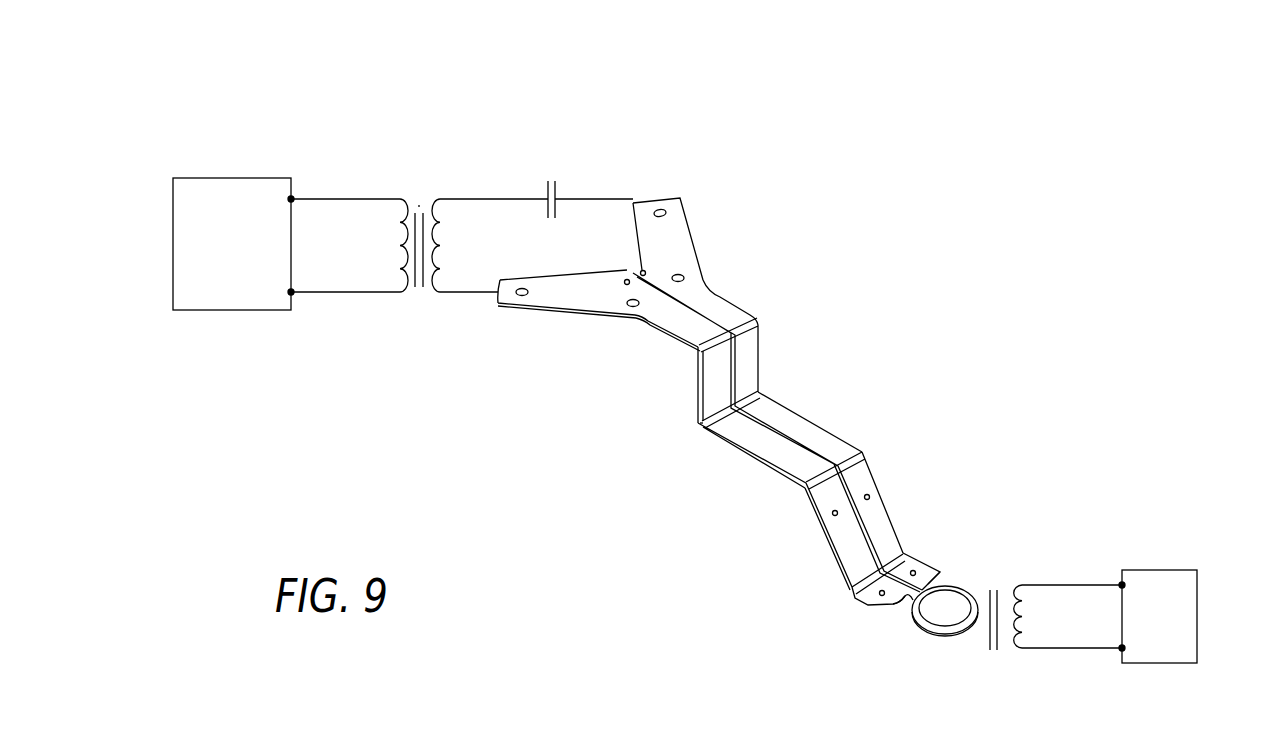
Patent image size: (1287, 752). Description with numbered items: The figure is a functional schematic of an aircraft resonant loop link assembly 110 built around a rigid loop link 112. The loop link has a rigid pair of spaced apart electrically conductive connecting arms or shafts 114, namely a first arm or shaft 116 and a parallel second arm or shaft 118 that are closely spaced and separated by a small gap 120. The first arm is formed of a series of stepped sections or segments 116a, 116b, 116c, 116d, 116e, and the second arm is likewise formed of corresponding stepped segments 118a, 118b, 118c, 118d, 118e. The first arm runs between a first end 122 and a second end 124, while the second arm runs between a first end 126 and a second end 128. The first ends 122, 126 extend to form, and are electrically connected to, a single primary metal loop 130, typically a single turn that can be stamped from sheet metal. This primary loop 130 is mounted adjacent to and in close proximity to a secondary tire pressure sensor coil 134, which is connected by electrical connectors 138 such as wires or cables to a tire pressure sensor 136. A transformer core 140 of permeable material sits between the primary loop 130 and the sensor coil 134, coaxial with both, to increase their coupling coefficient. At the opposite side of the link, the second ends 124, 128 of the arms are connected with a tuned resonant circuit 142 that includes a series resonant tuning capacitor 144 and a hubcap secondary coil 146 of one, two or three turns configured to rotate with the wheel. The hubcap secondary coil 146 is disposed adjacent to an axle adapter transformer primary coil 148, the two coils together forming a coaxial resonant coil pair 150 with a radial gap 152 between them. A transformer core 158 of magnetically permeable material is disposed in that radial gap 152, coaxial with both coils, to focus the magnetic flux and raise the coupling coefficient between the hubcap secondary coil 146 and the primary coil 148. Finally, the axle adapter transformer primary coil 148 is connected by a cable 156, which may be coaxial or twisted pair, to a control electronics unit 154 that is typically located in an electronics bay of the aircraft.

The resonant loop link assembly 110 is at (993, 353).
The rigid loop link 112 is at (848, 394).
The pair of spaced apart electrically conductive connecting arms or shafts 114 is at (704, 434).
The first arm or shaft 116 is at (828, 425).
The stepped section or segment of first arm 116a is at (915, 560).
The stepped section or segment of first arm 116b is at (872, 478).
The stepped section or segment of first arm 116c is at (800, 410).
The stepped section or segment of first arm 116d is at (750, 355).
The stepped section or segment of first arm 116e is at (715, 290).
The second arm or shaft 118 is at (751, 465).
The stepped section or segment of second arm 118a is at (862, 605).
The stepped section or segment of second arm 118b is at (840, 560).
The stepped section or segment of second arm 118c is at (732, 450).
The stepped section or segment of second arm 118d is at (705, 395).
The stepped section or segment of second arm 118e is at (663, 330).
The gap 120 is at (623, 268).
The first end of first arm 122 is at (935, 565).
The second end of first arm 124 is at (680, 210).
The first end of second arm 126 is at (888, 610).
The second end of second arm 128 is at (560, 308).
The single primary metal loop 130 is at (960, 636).
The secondary tire pressure sensor coil 134 is at (1012, 661).
The tire pressure sensor 136 is at (1186, 622).
The electrical connectors 138 is at (1075, 585).
The transformer core 140 is at (996, 586).
The tuned resonant circuit 142 is at (481, 192).
The series resonant tuning capacitor 144 is at (553, 172).
The hubcap secondary coil 146 is at (434, 303).
The axle adapter transformer primary coil 148 is at (405, 193).
The coaxial resonant coil pair 150 is at (428, 216).
The radial gap 152 is at (412, 310).
The control electronics unit 154 is at (197, 247).
The cable 156 is at (325, 197).
The transformer core 158 is at (443, 143).